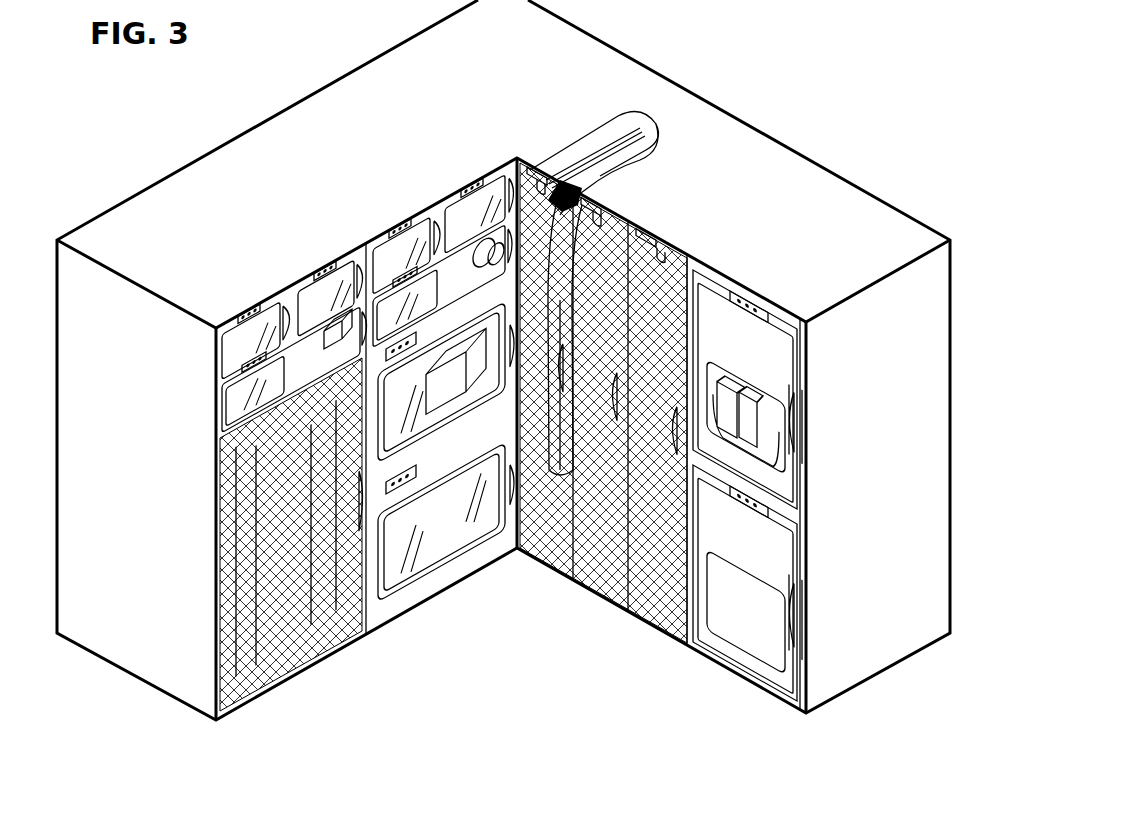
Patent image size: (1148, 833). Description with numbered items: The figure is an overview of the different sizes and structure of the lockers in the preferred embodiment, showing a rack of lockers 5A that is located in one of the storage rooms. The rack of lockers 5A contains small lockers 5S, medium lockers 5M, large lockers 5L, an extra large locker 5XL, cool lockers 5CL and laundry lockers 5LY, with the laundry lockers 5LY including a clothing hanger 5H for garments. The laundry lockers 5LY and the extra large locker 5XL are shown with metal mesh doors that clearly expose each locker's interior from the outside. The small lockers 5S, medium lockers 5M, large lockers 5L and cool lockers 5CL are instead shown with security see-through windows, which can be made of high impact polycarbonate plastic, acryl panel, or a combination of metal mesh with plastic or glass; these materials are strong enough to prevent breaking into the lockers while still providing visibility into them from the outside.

The rack of lockers 5A is at (778, 104).
The small lockers 5S is at (228, 328).
The medium lockers 5M is at (218, 403).
The large lockers 5L is at (439, 583).
The extra large locker 5XL is at (232, 559).
The laundry lockers 5LY is at (523, 164).
The clothing hanger 5H is at (597, 165).
The cool lockers 5CL is at (776, 330).